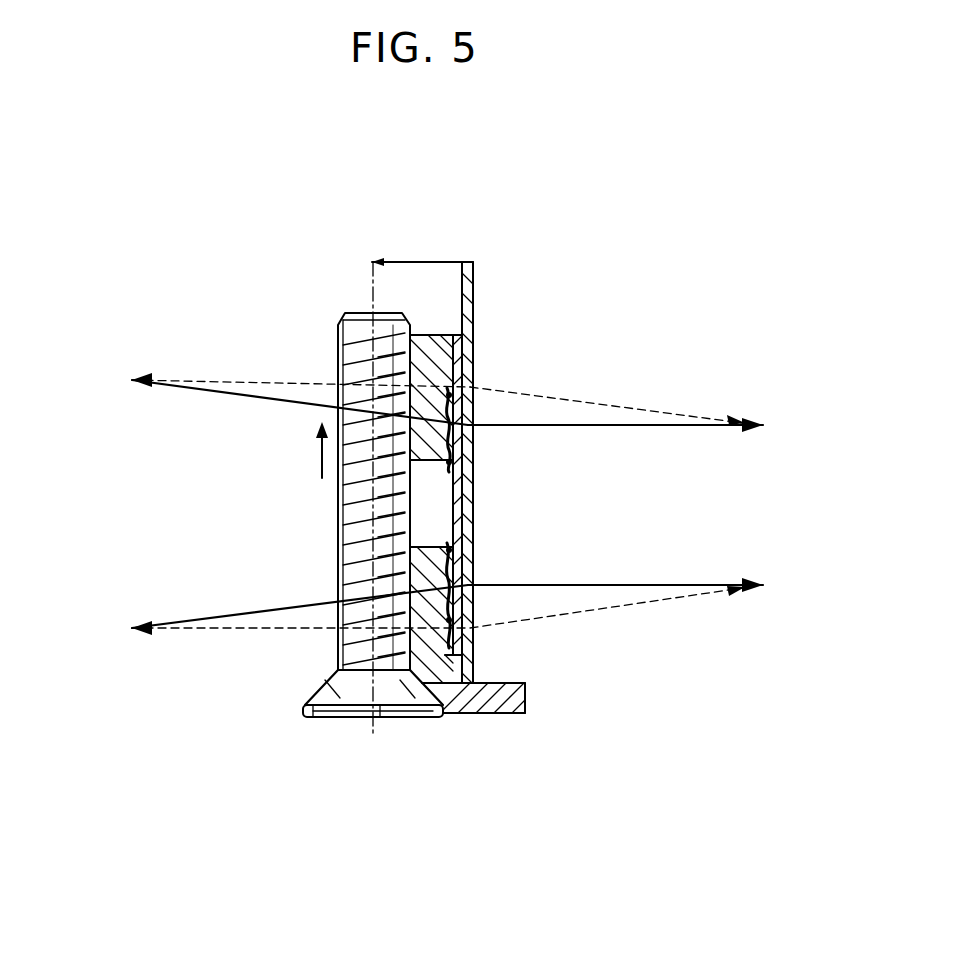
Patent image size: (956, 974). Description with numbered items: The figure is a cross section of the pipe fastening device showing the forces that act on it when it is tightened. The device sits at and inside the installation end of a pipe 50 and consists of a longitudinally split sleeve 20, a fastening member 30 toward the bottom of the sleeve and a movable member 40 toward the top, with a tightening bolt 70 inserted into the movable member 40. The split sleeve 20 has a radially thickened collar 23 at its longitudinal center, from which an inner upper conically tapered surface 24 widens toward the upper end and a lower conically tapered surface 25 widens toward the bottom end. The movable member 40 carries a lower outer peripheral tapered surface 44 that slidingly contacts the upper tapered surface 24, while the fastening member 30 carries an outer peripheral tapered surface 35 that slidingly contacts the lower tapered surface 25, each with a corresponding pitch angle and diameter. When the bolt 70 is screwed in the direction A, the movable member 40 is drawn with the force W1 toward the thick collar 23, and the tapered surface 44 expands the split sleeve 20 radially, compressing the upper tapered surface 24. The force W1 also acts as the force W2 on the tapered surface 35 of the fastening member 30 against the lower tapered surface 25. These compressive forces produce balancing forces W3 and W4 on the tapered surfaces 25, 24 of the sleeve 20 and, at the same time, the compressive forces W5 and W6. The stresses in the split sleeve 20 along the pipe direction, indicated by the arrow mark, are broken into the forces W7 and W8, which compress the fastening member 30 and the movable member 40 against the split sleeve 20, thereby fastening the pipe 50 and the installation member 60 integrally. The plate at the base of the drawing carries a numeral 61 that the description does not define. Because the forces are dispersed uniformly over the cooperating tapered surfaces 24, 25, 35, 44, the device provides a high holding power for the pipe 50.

The split sleeve 20 is at (470, 524).
The thick collar 23 is at (440, 497).
The inner upper conically tapered surface 24 is at (475, 437).
The lower conically tapered surface 25 is at (473, 602).
The fastening member 30 is at (455, 668).
The outer peripheral tapered surface 35 is at (466, 618).
The movable member 40 is at (425, 335).
The lower outer peripheral tapered surface 44 is at (475, 338).
The pipe 50 is at (475, 272).
The installation member 60 is at (500, 714).
The hole 61 is at (430, 717).
The tightening bolt 70 is at (355, 699).
The force W1 is at (462, 468).
The force W2 is at (480, 620).
The balancing force W3 is at (468, 393).
The balancing force W4 is at (460, 574).
The compressive force W5 is at (642, 414).
The compressive force W6 is at (642, 600).
The force W7 is at (272, 396).
The force W8 is at (272, 615).
The direction A is at (321, 466).